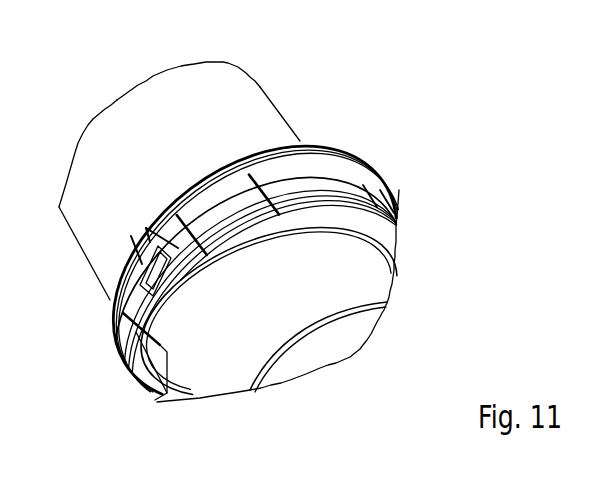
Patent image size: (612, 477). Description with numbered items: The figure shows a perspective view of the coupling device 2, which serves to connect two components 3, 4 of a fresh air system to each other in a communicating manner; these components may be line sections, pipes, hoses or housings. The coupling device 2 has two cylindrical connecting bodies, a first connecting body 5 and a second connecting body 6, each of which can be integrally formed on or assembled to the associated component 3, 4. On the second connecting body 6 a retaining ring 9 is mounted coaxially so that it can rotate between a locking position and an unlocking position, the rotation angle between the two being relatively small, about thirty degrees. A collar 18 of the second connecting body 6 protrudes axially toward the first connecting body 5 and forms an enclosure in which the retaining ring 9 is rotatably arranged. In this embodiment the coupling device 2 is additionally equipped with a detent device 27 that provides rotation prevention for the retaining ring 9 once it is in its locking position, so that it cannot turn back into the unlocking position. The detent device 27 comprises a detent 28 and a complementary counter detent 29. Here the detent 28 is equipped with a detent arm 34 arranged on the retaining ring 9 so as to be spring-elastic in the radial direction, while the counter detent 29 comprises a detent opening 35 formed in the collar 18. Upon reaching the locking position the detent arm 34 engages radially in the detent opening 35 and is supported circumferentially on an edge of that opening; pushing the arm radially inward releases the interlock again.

The coupling device 2 is at (440, 181).
The component 3 is at (274, 88).
The component 4 is at (326, 342).
The first connecting body 5 is at (183, 80).
The second connecting body 6 is at (367, 277).
The retaining ring 9 is at (218, 206).
The collar 18 is at (321, 167).
The detent device 27 is at (147, 228).
The detent 28 is at (127, 260).
The counter detent 29 is at (131, 244).
The detent arm 34 is at (142, 263).
The detent opening 35 is at (141, 290).